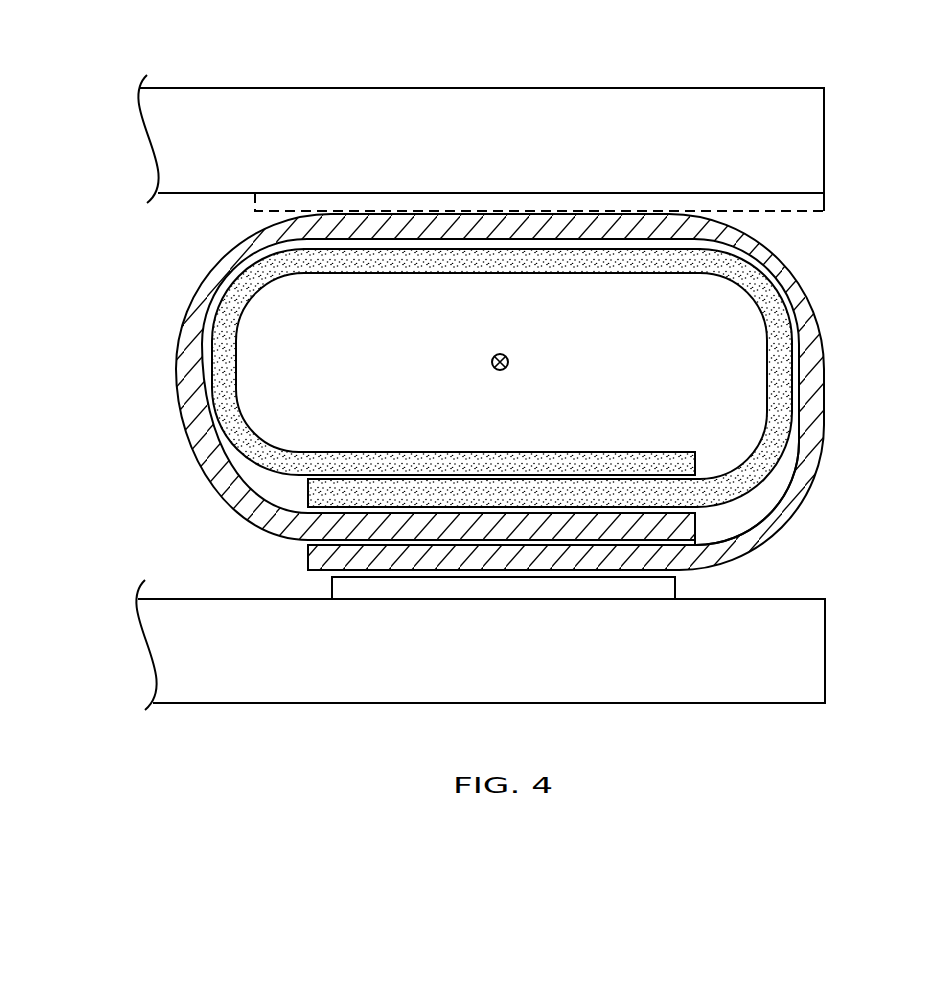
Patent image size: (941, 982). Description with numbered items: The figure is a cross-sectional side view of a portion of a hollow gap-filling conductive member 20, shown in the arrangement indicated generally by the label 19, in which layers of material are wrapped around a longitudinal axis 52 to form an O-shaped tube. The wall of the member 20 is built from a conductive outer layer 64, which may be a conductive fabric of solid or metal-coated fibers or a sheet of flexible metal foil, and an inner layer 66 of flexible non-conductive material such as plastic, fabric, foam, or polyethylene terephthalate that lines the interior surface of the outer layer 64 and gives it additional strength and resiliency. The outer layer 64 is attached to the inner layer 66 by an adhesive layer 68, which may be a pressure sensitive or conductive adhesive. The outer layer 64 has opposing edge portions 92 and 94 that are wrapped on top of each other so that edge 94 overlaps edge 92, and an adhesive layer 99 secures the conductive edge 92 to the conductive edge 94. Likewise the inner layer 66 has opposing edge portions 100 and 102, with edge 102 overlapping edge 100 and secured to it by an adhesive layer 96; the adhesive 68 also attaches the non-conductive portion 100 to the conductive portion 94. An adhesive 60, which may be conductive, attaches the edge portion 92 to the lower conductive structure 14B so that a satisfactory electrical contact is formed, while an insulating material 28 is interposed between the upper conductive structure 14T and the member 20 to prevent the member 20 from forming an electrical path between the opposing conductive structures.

The conductive structure 14T is at (820, 137).
The conductive structure 14B is at (820, 658).
The insulating material 28 is at (818, 203).
The hinge structure 19 is at (876, 251).
The conductive member 20 is at (879, 318).
The longitudinal axis 52 is at (510, 362).
The adhesive 60 is at (637, 594).
The conductive outer layer 64 is at (812, 447).
The inner layer 66 is at (238, 401).
The adhesive layer 68 is at (692, 512).
The edge portion 92 is at (317, 553).
The edge portion 94 is at (693, 525).
The adhesive layer 96 is at (706, 480).
The adhesive layer 99 is at (315, 542).
The edge portion 100 is at (310, 495).
The edge portion 102 is at (585, 452).